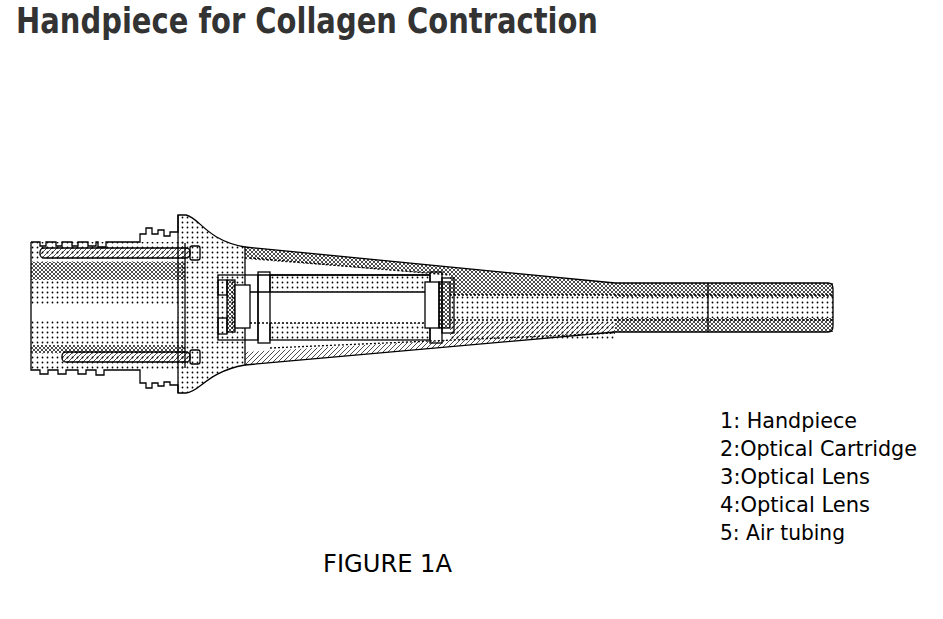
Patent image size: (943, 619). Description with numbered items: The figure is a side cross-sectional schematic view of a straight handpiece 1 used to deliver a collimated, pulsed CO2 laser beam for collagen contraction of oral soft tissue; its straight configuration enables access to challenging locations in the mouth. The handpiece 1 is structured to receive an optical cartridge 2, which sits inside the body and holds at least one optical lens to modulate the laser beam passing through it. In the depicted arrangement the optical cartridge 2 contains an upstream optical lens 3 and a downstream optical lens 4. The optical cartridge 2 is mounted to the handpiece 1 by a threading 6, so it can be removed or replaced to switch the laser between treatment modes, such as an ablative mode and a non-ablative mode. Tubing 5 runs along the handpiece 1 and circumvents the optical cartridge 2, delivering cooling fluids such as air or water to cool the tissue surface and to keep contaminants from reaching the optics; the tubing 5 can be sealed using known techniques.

The handpiece 1 is at (485, 265).
The optical cartridge 2 is at (335, 300).
The upstream optical lens 3 is at (435, 330).
The downstream optical lens 4 is at (247, 330).
The tubing 5 is at (123, 240).
The threading 6 is at (290, 268).